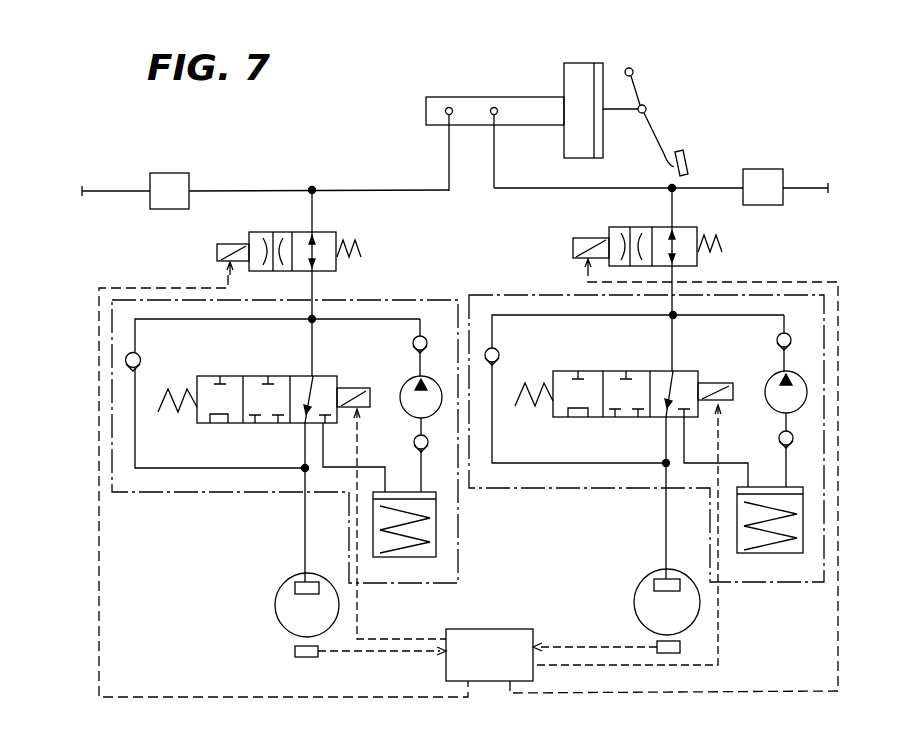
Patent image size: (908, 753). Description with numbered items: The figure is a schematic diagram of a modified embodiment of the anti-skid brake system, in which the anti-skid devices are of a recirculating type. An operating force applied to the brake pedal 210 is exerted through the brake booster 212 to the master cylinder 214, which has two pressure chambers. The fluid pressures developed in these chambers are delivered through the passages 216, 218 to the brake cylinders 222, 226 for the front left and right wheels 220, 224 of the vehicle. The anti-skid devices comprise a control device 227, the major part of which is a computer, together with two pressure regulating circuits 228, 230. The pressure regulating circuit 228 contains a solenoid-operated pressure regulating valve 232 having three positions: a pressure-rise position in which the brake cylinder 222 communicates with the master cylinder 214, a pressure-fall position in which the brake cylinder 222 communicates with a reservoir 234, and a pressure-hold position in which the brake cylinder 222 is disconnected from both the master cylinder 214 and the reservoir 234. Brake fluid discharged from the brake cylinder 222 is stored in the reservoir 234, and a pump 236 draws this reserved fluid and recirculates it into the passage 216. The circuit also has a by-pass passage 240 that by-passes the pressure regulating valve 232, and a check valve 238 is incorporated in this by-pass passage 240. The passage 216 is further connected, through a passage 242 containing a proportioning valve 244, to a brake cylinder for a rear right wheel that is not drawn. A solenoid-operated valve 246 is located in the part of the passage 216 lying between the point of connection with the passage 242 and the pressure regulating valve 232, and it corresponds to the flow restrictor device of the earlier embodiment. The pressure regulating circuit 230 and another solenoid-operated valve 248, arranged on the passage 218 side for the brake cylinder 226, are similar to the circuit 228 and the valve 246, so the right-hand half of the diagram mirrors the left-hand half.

The brake pedal 210 is at (652, 131).
The brake booster 212 is at (564, 74).
The master cylinder 214 is at (426, 109).
The passage 216 is at (316, 212).
The passage 218 is at (668, 205).
The front left wheel 220 is at (283, 606).
The brake cylinder 222 is at (294, 588).
The front right wheel 224 is at (642, 600).
The brake cylinder 226 is at (655, 582).
The control device 227 is at (503, 633).
The pressure regulating circuit 228 is at (437, 299).
The pressure regulating circuit 230 is at (533, 295).
The solenoid-operated pressure regulating valve 232 is at (253, 376).
The reservoir 234 is at (440, 537).
The pump 236 is at (402, 390).
The check valve 238 is at (125, 358).
The by-pass passage 240 is at (135, 410).
The passage 242 is at (247, 190).
The proportioning valve 244 is at (158, 179).
The solenoid-operated valve 246 is at (336, 267).
The solenoid-operated valve 248 is at (697, 262).